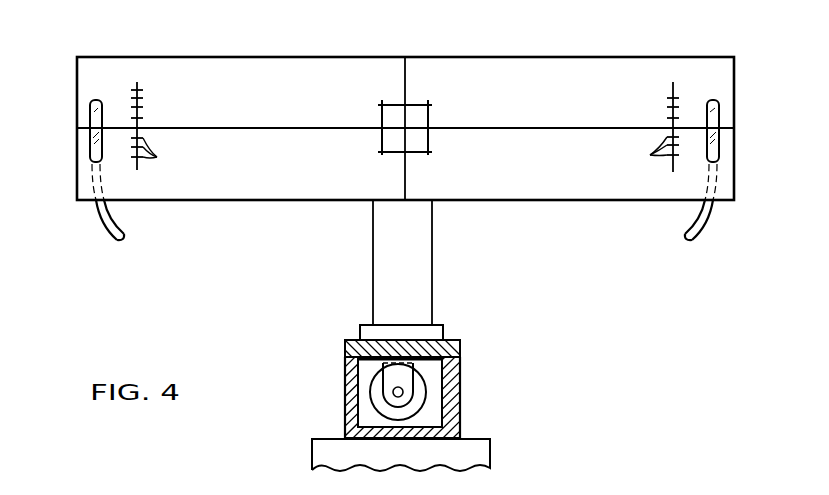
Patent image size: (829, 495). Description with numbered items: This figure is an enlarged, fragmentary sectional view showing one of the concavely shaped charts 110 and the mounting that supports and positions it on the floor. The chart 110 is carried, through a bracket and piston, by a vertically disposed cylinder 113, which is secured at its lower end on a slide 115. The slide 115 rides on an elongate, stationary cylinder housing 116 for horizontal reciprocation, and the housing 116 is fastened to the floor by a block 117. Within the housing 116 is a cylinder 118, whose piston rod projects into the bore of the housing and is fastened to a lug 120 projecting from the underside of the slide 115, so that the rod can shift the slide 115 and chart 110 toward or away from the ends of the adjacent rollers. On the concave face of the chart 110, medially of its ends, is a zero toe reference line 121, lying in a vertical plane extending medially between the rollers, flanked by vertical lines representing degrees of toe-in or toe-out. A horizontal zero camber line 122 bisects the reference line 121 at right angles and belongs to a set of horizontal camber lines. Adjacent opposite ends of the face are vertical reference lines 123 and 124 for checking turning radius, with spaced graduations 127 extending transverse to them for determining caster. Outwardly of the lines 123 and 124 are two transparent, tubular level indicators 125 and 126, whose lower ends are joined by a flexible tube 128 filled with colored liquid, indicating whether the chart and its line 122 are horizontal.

The chart 110 is at (578, 57).
The cylinder 113 is at (432, 253).
The slide 115 is at (461, 340).
The cylinder housing 116 is at (345, 378).
The block 117 is at (485, 460).
The cylinder 118 is at (430, 407).
The lug 120 is at (413, 370).
The zero toe reference line 121 is at (405, 83).
The zero camber line 122 is at (275, 131).
The vertical reference line 123 is at (137, 83).
The vertical reference line 124 is at (673, 87).
The level indicator 125 is at (90, 108).
The level indicator 126 is at (719, 117).
The graduations 127 is at (157, 157).
The flexible tube 128 is at (103, 222).